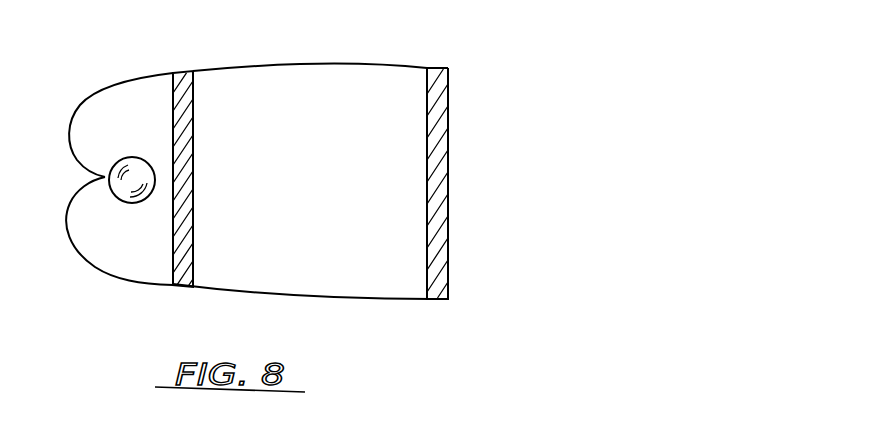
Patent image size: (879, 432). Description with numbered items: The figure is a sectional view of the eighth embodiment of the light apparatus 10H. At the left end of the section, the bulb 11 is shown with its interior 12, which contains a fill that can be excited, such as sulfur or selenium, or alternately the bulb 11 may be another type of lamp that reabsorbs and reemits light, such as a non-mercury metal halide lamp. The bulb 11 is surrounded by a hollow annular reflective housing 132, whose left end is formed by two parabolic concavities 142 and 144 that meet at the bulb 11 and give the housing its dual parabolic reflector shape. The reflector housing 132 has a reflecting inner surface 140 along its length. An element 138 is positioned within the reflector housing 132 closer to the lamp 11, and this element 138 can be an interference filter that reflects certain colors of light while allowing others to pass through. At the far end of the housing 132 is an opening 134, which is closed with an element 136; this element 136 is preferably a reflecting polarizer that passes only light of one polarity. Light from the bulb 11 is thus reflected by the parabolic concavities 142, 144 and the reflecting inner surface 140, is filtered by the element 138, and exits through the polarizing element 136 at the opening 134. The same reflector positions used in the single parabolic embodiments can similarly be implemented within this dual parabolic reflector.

The light apparatus 10H is at (360, 50).
The bulb 11 is at (131, 204).
The interior 12 is at (138, 161).
The hollow annular reflective housing 132 is at (273, 40).
The opening 134 is at (408, 98).
The element 136 is at (437, 68).
The element 138 is at (180, 288).
The reflecting inner surface 140 is at (313, 66).
The parabolic concavity 142 is at (122, 153).
The parabolic concavity 144 is at (120, 241).